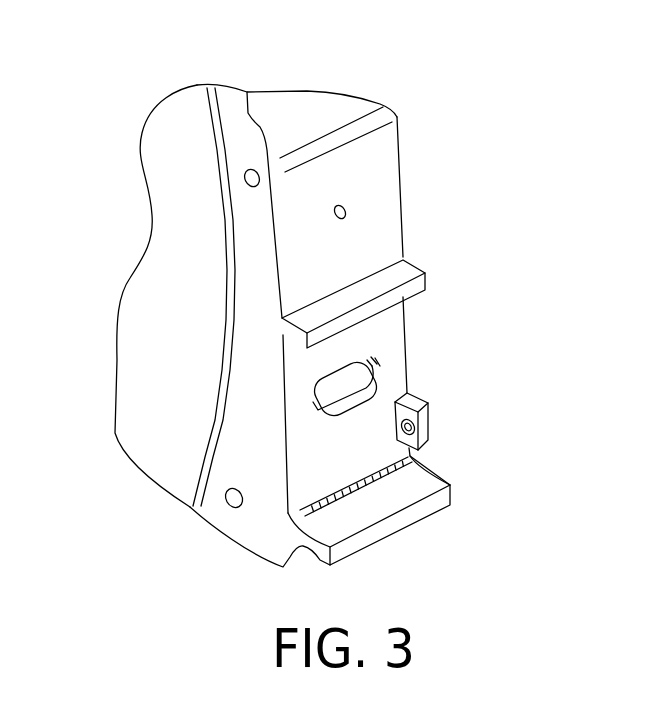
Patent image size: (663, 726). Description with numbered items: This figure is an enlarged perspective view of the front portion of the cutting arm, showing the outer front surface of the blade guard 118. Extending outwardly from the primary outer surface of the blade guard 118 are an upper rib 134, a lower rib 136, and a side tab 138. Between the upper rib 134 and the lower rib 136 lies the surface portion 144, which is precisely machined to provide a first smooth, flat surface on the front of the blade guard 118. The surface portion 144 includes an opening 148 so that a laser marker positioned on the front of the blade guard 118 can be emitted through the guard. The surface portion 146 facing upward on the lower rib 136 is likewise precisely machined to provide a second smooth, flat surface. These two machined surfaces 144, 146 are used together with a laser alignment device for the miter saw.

The blade guard 118 is at (182, 287).
The upper rib 134 is at (407, 264).
The lower rib 136 is at (437, 496).
The side tab 138 is at (407, 397).
The surface portion 144 is at (393, 351).
The surface portion 146 is at (420, 480).
The opening 148 is at (337, 385).